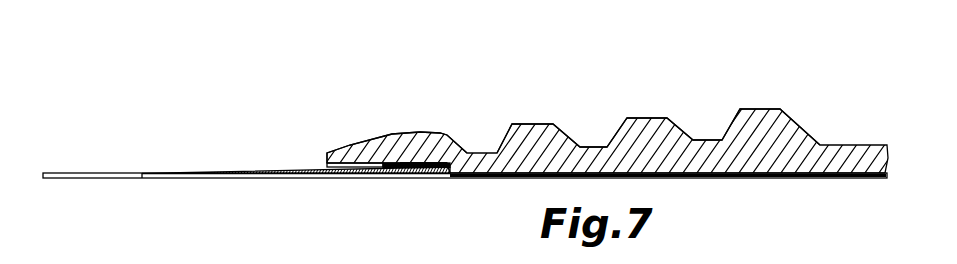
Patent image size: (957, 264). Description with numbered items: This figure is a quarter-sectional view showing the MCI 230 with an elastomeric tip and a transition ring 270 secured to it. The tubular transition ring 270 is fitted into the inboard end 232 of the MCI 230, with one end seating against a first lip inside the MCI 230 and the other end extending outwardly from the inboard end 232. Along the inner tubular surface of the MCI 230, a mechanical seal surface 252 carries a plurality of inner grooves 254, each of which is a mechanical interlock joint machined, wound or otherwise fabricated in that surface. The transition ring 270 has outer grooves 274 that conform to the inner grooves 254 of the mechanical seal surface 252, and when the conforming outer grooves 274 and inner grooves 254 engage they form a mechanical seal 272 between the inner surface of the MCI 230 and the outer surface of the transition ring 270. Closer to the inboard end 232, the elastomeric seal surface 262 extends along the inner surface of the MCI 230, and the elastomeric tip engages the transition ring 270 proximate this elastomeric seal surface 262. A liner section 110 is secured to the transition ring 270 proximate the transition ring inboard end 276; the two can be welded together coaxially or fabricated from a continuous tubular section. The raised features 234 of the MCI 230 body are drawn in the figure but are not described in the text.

The liner section 110 is at (88, 173).
The MCI 230 is at (840, 145).
The inboard end 232 is at (343, 150).
The raised ridges 234 is at (703, 125).
The mechanical seal surface 252 is at (415, 165).
The inner grooves 254 is at (423, 165).
The elastomeric seal surface 262 is at (343, 178).
The transition ring 270 is at (240, 180).
The mechanical seal 272 is at (437, 178).
The outer grooves 274 is at (407, 178).
The transition ring inboard end 276 is at (142, 180).